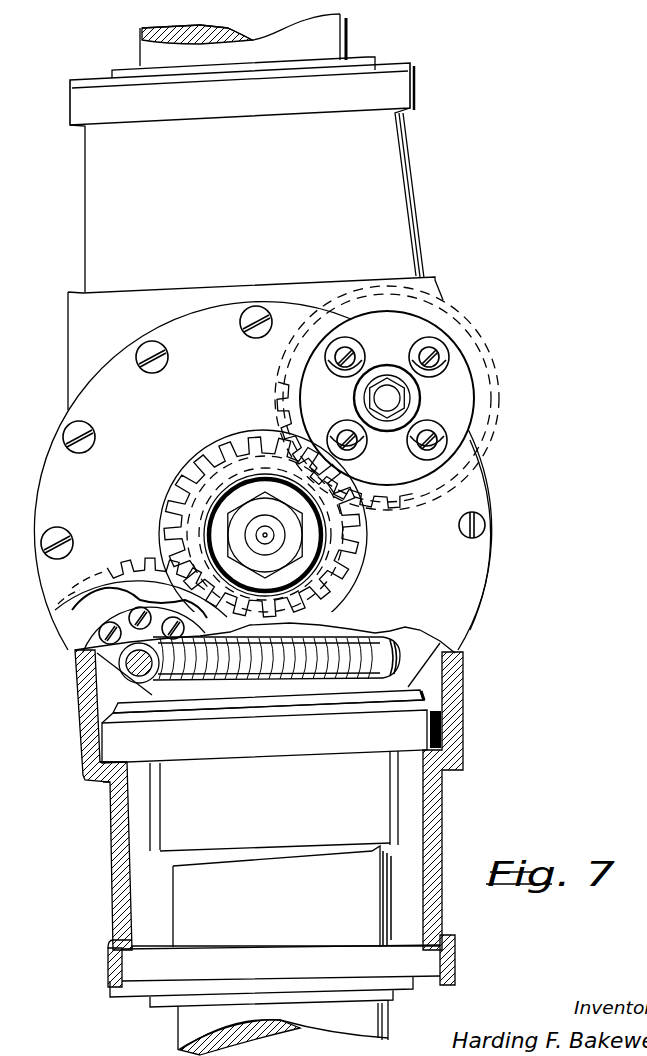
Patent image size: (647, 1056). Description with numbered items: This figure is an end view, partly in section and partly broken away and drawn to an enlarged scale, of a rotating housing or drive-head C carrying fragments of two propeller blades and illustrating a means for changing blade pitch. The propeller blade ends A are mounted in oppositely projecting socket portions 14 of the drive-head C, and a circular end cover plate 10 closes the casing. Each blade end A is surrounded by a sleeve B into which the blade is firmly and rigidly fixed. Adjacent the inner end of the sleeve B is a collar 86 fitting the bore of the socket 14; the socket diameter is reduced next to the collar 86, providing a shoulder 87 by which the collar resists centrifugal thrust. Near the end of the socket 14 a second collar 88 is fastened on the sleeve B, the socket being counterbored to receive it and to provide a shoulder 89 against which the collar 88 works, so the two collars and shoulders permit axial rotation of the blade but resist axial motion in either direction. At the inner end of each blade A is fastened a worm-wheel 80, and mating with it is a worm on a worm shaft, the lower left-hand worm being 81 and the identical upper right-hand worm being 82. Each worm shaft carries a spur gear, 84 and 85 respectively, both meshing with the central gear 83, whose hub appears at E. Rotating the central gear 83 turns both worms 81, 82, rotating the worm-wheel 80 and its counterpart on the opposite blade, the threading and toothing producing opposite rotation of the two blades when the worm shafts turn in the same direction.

The propeller blade end A is at (154, 49).
The circular end cover plate 10 is at (57, 480).
The socket portion 14 is at (75, 341).
The worm-wheel 80 is at (392, 655).
The worm 81 is at (125, 661).
The worm 82 is at (387, 398).
The central gear 83 is at (238, 463).
The spur gear 84 is at (70, 593).
The spur gear 85 is at (483, 373).
The collar 86 is at (118, 745).
The shoulder 87 is at (115, 765).
The second collar 88 is at (122, 978).
The shoulder 89 is at (118, 948).
The sleeve B is at (172, 833).
The rotating housing or drive-head C is at (474, 562).
The gear hub nut E is at (268, 535).